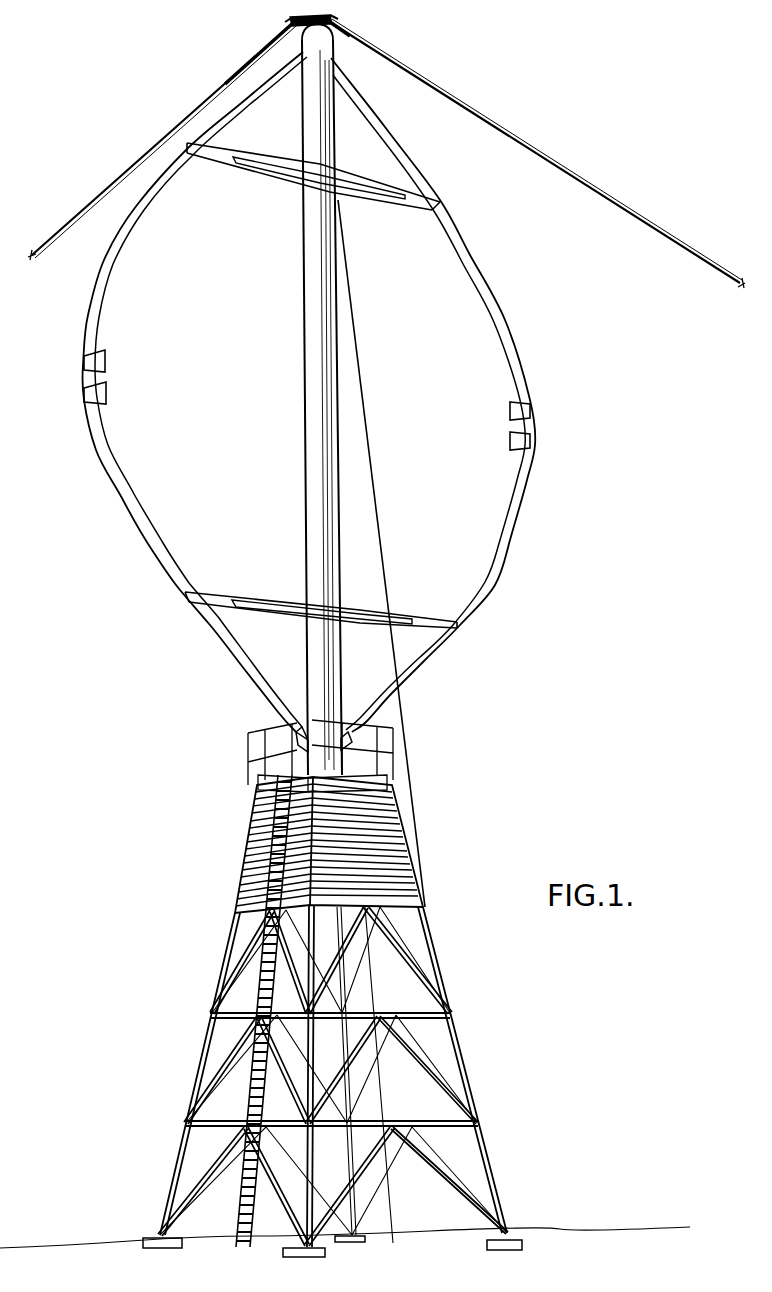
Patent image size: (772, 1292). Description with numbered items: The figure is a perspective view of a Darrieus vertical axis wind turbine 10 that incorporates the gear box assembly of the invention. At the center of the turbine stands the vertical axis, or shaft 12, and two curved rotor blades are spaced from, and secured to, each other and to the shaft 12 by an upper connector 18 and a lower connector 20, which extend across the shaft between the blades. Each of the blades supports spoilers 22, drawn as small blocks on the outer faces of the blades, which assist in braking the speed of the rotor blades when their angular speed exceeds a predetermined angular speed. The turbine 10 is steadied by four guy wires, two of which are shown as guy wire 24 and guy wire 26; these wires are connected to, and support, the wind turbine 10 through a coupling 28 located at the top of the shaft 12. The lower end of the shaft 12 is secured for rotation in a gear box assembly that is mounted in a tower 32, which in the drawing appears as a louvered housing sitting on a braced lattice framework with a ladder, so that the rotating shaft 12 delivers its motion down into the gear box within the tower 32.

The Darrieus vertical axis wind turbine 10 is at (560, 673).
The vertical axis shaft 12 is at (306, 366).
The connector 18 is at (217, 166).
The connector 20 is at (220, 590).
The spoilers 22 is at (106, 362).
The guy wire 24 is at (537, 152).
The guy wire 26 is at (126, 164).
The coupling 28 is at (322, 15).
The tower 32 is at (236, 870).